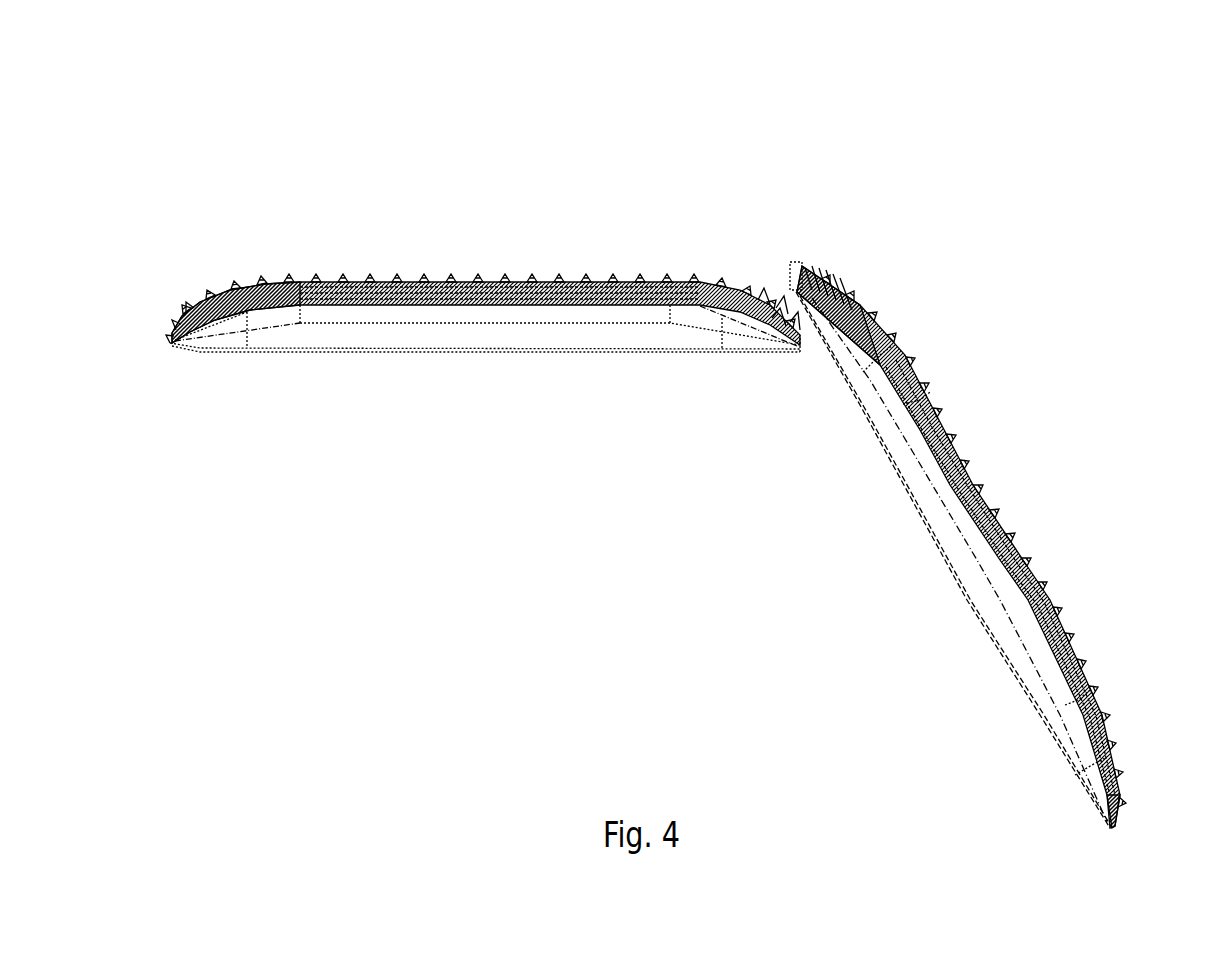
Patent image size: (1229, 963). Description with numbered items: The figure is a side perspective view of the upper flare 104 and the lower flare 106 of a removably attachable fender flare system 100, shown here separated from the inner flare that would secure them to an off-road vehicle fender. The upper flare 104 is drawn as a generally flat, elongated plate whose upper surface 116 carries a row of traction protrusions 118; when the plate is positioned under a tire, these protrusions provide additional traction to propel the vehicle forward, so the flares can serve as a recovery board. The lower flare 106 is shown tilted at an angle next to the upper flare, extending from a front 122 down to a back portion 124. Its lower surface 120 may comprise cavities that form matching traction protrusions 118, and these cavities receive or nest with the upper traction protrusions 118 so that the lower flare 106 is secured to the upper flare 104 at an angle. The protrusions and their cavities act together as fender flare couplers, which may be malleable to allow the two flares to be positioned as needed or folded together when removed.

The removably attachable fender flare system 100 is at (236, 100).
The upper flare 104 is at (526, 330).
The lower flare 106 is at (982, 552).
The upper surface 116 is at (226, 262).
The traction protrusions 118 is at (405, 278).
The lower surface 120 is at (830, 408).
The front 122 is at (820, 273).
The back portion 124 is at (1118, 753).